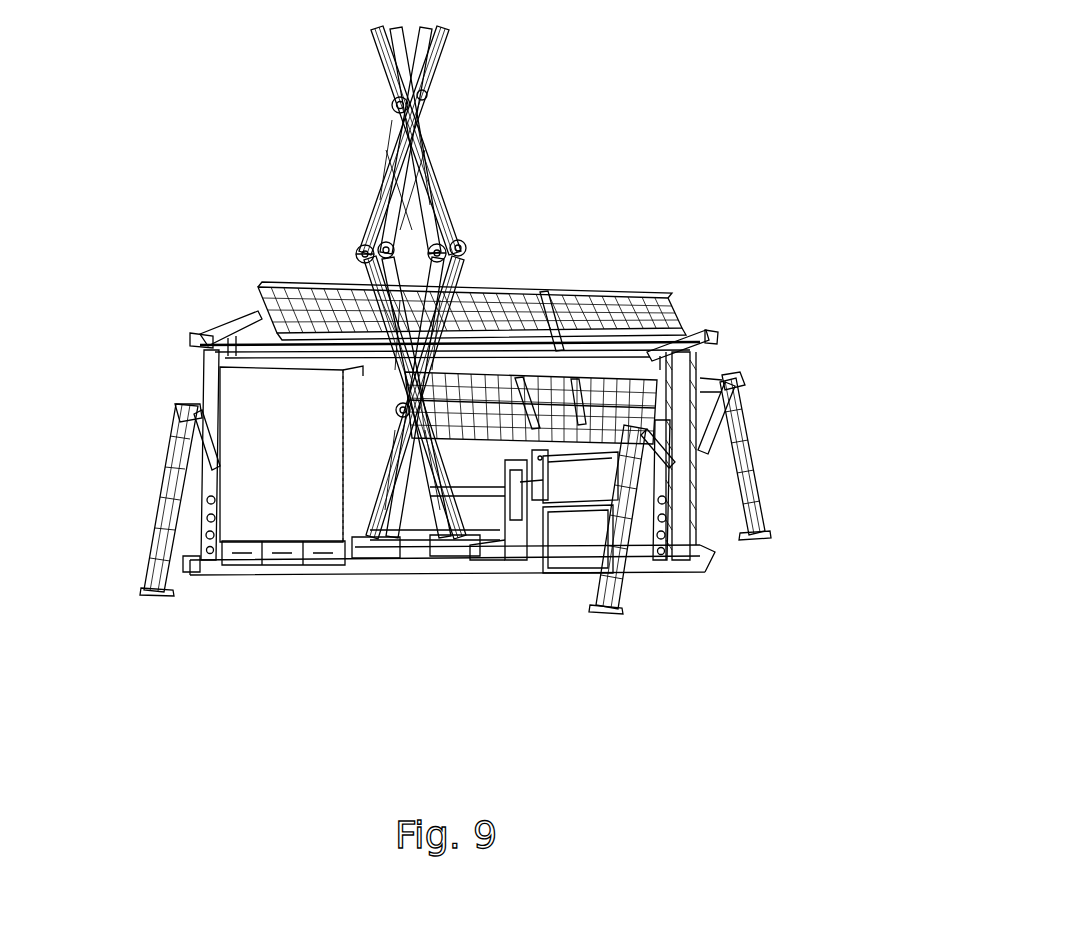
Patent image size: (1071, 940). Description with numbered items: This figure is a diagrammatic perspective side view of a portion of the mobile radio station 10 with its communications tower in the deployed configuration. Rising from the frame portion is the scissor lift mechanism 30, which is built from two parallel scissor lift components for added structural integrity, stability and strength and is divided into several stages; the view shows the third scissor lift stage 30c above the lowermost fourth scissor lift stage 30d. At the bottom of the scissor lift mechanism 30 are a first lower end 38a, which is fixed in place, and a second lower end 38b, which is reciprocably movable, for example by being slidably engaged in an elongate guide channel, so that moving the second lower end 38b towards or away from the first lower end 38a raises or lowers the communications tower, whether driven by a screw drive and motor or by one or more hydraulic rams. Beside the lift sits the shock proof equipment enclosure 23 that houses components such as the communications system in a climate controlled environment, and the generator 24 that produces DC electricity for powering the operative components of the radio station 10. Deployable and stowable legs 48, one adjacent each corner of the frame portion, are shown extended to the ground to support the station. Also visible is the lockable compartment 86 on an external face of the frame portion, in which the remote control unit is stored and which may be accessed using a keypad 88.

The mobile radio station 10 is at (655, 69).
The scissor lift mechanism 30 is at (554, 152).
The third scissor lift stage 30c is at (440, 118).
The fourth scissor lift stage 30d is at (390, 441).
The lockable compartment 86 is at (605, 297).
The equipment enclosure 23 is at (228, 381).
The deployable leg 48 is at (132, 534).
The first lower end 38a is at (373, 545).
The second lower end 38b is at (453, 528).
The keypad 88 is at (483, 420).
The generator 24 is at (557, 555).